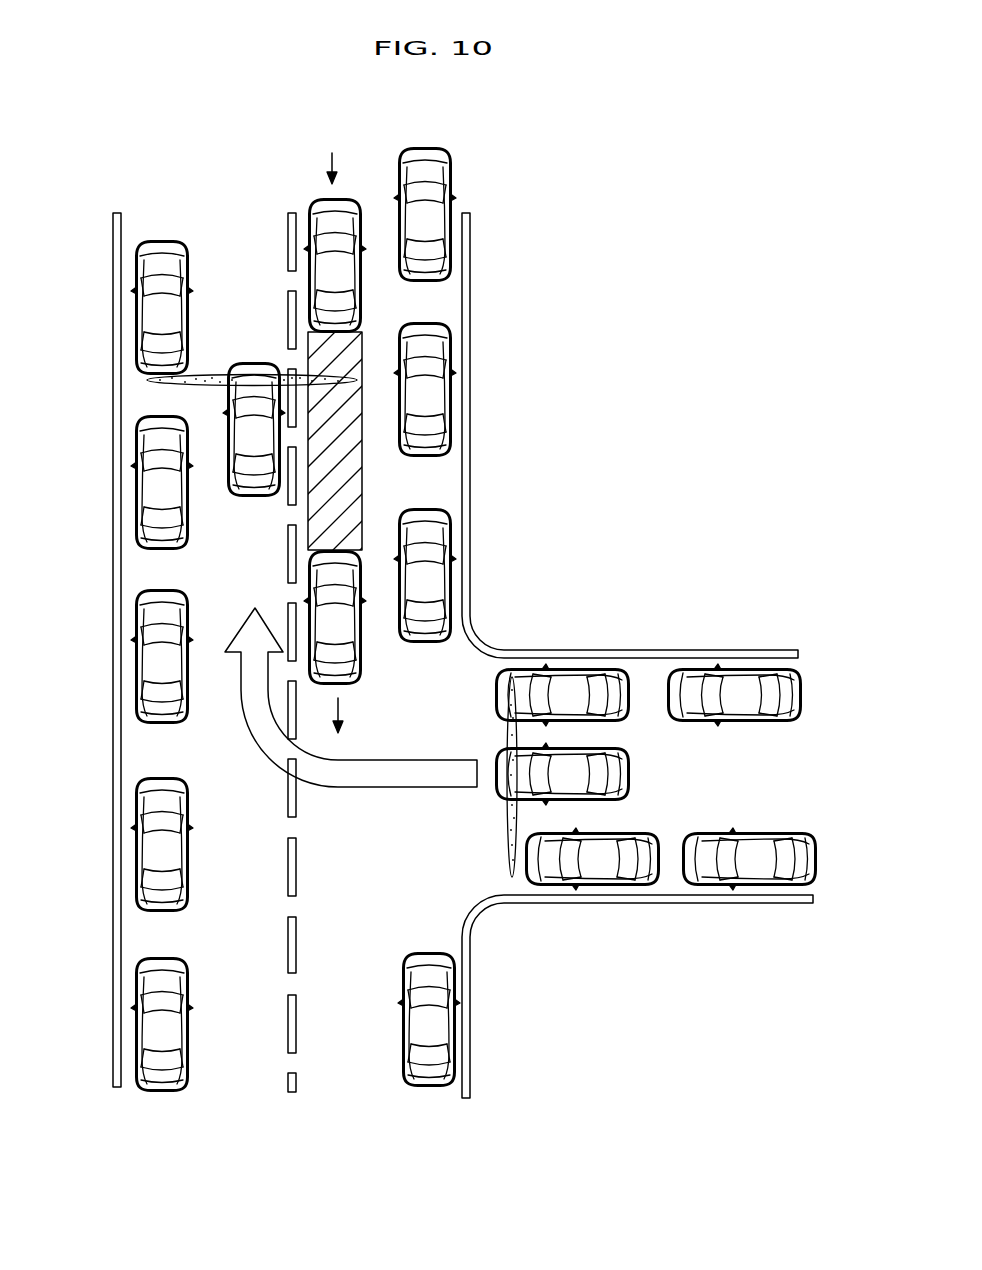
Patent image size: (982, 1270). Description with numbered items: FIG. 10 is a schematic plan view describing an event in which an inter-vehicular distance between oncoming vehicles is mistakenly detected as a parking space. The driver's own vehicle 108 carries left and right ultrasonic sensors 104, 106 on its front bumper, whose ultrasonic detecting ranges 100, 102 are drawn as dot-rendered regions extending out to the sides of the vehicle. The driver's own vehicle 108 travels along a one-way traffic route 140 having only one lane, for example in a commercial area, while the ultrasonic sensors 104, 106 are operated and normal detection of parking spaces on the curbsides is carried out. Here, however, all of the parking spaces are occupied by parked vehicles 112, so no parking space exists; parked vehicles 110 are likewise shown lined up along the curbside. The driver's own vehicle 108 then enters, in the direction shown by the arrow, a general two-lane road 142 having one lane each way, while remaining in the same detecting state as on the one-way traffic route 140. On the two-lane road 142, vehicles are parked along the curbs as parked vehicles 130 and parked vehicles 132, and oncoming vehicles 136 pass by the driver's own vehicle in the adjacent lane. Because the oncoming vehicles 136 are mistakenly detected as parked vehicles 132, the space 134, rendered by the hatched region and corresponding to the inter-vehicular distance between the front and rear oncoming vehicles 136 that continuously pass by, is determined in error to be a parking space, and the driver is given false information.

The ultrasonic detecting range 100 is at (180, 383).
The ultrasonic detecting range 102 is at (303, 375).
The ultrasonic sensor 104 is at (222, 383).
The ultrasonic sensor 106 is at (283, 378).
The driver's own vehicle 108 is at (620, 777).
The parked vehicles 110 is at (587, 893).
The parked vehicles 112 is at (578, 670).
The parked vehicles on left side 130 is at (135, 478).
The parked vehicles 132 is at (452, 206).
The space 134 is at (347, 473).
The oncoming vehicles 136 is at (327, 200).
The one-way traffic route 140 is at (790, 782).
The general two-lane road 142 is at (219, 182).